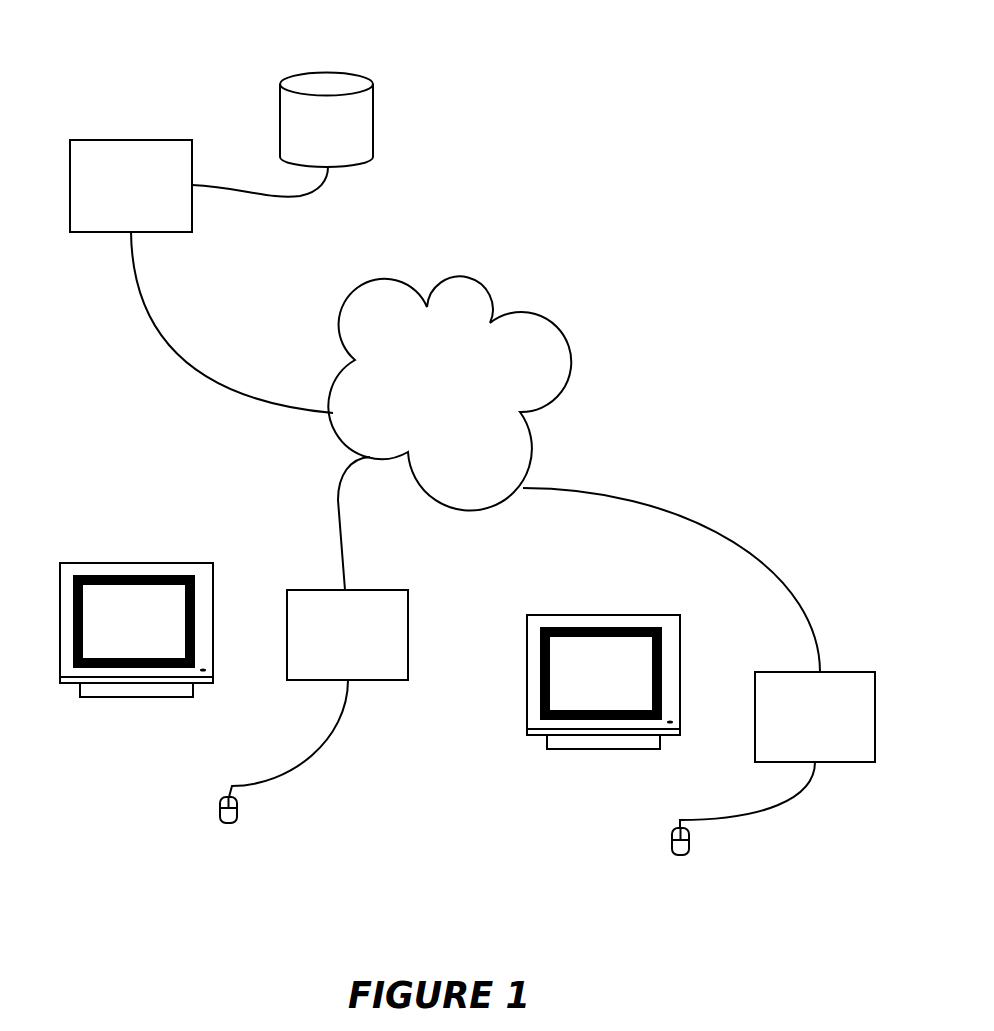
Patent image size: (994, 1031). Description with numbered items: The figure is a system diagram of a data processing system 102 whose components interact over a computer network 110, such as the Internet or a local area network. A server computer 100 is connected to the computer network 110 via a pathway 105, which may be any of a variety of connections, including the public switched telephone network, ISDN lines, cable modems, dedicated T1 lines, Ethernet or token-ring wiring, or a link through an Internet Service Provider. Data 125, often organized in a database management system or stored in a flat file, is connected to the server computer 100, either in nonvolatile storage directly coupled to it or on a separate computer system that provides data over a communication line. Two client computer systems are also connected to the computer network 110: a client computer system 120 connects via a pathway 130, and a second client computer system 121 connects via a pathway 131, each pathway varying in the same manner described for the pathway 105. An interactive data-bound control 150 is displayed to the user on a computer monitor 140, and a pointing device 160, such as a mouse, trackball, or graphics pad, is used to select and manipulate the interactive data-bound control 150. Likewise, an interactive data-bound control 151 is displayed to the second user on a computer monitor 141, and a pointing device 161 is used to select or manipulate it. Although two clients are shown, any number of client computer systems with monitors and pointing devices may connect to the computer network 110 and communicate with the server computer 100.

The data processing system 102 is at (592, 93).
The server computer 100 is at (116, 195).
The data 125 is at (313, 131).
The pathway 105 is at (200, 327).
The computer network 110 is at (438, 401).
The pathway 130 is at (293, 510).
The pathway 131 is at (671, 548).
The client computer system 120 is at (332, 644).
The second client computer system 121 is at (800, 726).
The computer monitor 140 is at (138, 563).
The computer monitor 141 is at (598, 617).
The interactive data-bound control 150 is at (114, 662).
The interactive data-bound control 151 is at (579, 715).
The pointing device 160 is at (239, 794).
The pointing device 161 is at (698, 852).